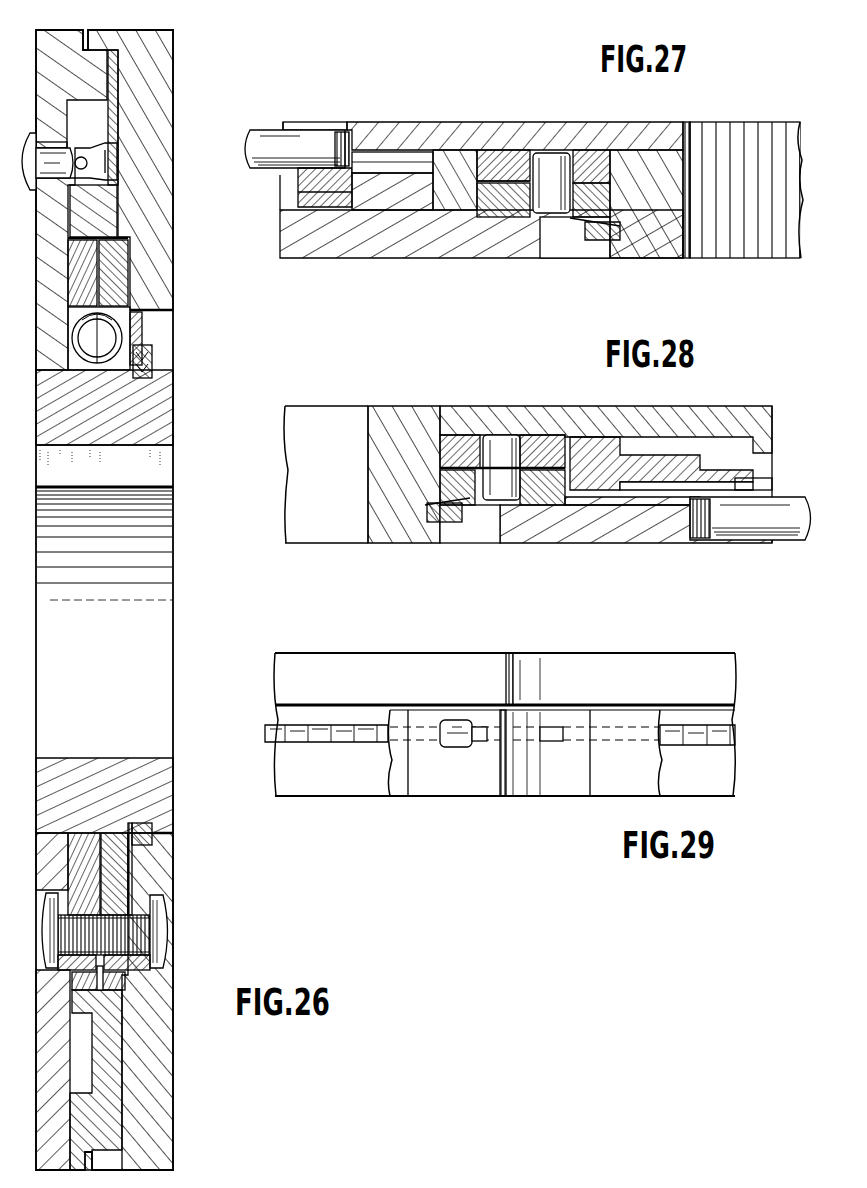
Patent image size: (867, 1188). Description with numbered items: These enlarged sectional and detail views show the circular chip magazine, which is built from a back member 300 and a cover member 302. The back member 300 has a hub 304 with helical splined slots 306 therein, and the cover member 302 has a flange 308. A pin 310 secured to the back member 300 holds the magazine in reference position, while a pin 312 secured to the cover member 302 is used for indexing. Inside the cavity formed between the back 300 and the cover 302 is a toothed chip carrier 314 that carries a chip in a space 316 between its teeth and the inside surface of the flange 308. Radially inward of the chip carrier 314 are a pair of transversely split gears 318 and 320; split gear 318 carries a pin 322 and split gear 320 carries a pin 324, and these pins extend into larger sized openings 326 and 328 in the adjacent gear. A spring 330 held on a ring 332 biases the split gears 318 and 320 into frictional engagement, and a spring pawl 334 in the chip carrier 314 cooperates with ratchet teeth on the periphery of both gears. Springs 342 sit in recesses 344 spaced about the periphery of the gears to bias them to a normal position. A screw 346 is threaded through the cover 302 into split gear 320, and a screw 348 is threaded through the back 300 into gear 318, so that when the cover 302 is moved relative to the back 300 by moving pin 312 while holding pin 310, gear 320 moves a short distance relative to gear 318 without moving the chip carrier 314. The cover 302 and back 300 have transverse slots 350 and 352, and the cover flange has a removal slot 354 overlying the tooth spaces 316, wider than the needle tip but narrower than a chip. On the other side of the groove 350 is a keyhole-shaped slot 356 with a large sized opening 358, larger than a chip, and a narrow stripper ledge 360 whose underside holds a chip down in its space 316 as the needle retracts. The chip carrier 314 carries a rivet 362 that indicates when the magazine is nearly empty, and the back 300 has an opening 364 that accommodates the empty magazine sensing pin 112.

In FIG. 26, the empty magazine sensing pin 112 is at (52, 165).
In FIG. 26, the back member 300 is at (73, 33).
In FIG. 27, the back member 300 is at (466, 124).
In FIG. 28, the back member 300 is at (454, 407).
In FIG. 29, the back member 300 is at (669, 660).
In FIG. 26, the cover member 302 is at (176, 36).
In FIG. 27, the cover member 302 is at (392, 256).
In FIG. 28, the cover member 302 is at (630, 514).
In FIG. 26, the hub 304 is at (155, 450).
In FIG. 26, the helical splined slots 306 is at (136, 490).
In FIG. 26, the flange 308 is at (110, 36).
In FIG. 27, the pin 310 is at (272, 134).
In FIG. 28, the pin 312 is at (792, 516).
In FIG. 26, the toothed chip carrier 314 is at (116, 214).
In FIG. 28, the toothed chip carrier 314 is at (650, 462).
In FIG. 28, the space 316 is at (765, 484).
In FIG. 29, the space 316 is at (518, 745).
In FIG. 26, the split gear 318 is at (78, 866).
In FIG. 27, the split gear 318 is at (600, 164).
In FIG. 28, the split gear 318 is at (536, 450).
In FIG. 26, the split gear 320 is at (126, 884).
In FIG. 28, the split gear 320 is at (553, 500).
In FIG. 28, the pin 322 is at (495, 450).
In FIG. 27, the pin 324 is at (549, 165).
In FIG. 28, the opening 326 is at (458, 494).
In FIG. 27, the opening 328 is at (589, 160).
In FIG. 26, the spring 330 is at (130, 862).
In FIG. 28, the spring 330 is at (486, 522).
In FIG. 26, the ring 332 is at (152, 836).
In FIG. 28, the ring 332 is at (442, 522).
In FIG. 26, the spring pawl 334 is at (125, 984).
In FIG. 26, the springs 342 is at (138, 338).
In FIG. 26, the recesses 344 is at (124, 318).
In FIG. 26, the screw 346 is at (166, 935).
In FIG. 26, the screw 348 is at (45, 936).
In FIG. 29, the transverse slot 350 is at (545, 796).
In FIG. 29, the transverse slot 352 is at (545, 662).
In FIG. 29, the removal slot 354 is at (566, 738).
In FIG. 29, the keyhole-shaped slot 356 is at (479, 712).
In FIG. 29, the large sized opening 358 is at (479, 745).
In FIG. 29, the stripper ledge 360 is at (452, 720).
In FIG. 26, the rivet 362 is at (84, 152).
In FIG. 26, the opening 364 is at (50, 142).